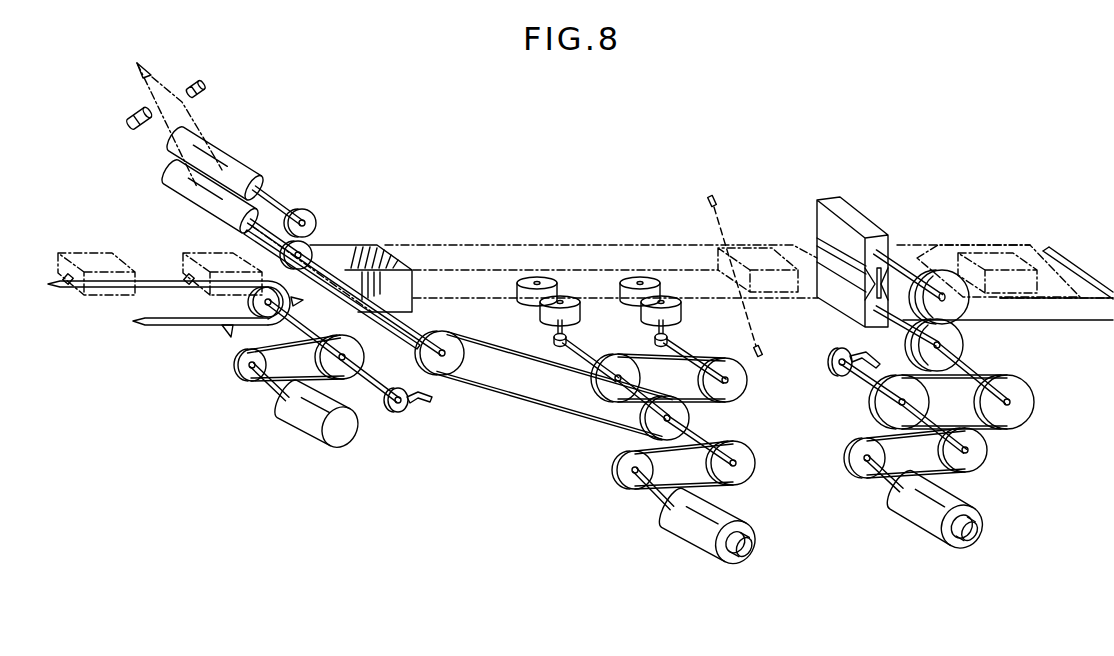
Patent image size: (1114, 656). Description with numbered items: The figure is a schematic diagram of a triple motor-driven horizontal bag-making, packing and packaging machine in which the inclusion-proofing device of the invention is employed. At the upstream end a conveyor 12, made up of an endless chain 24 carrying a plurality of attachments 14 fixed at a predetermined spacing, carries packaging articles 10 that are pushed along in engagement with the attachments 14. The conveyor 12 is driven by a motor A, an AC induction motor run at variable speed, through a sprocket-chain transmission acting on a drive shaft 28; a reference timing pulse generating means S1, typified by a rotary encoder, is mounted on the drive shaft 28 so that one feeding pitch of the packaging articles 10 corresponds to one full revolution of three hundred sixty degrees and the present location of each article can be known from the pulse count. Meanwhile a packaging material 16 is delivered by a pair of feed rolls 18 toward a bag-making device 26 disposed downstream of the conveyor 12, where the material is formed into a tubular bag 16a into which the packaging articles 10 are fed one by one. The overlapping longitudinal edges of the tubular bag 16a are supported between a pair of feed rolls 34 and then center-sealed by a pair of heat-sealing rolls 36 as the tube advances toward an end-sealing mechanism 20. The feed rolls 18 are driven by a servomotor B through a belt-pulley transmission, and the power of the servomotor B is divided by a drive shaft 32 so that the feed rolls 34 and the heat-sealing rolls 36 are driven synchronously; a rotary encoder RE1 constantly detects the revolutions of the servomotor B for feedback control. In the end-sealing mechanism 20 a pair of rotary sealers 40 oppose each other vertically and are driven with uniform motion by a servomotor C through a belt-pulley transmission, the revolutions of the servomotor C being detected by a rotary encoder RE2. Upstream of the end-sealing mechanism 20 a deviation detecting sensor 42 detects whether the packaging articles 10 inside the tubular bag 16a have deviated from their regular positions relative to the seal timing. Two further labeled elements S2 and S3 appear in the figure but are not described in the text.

The packaging material 16 is at (152, 60).
The film sensor S2 is at (204, 82).
The feed rolls 18 is at (232, 162).
The packaging articles 10 is at (93, 256).
The attachments 14 is at (188, 275).
The endless chain 24 is at (149, 327).
The conveyor 12 is at (168, 326).
The drive shaft 28 is at (298, 323).
The bag-making device 26 is at (333, 250).
The tubular bag 16a is at (434, 246).
The feed rolls 34 is at (532, 276).
The heat-sealing rolls 36 is at (639, 276).
The deviation detecting sensor 42 is at (722, 197).
The rotary sealers 40 is at (817, 198).
The end-sealing mechanism 20 is at (876, 216).
The motor A is at (300, 418).
The reference timing pulse generating means S1 is at (430, 401).
The drive shaft 32 is at (699, 428).
The servomotor B is at (688, 528).
The rotary encoder RE1 is at (752, 552).
The servomotor C is at (918, 510).
The rotary encoder RE2 is at (980, 546).
The sensor S3 is at (860, 361).